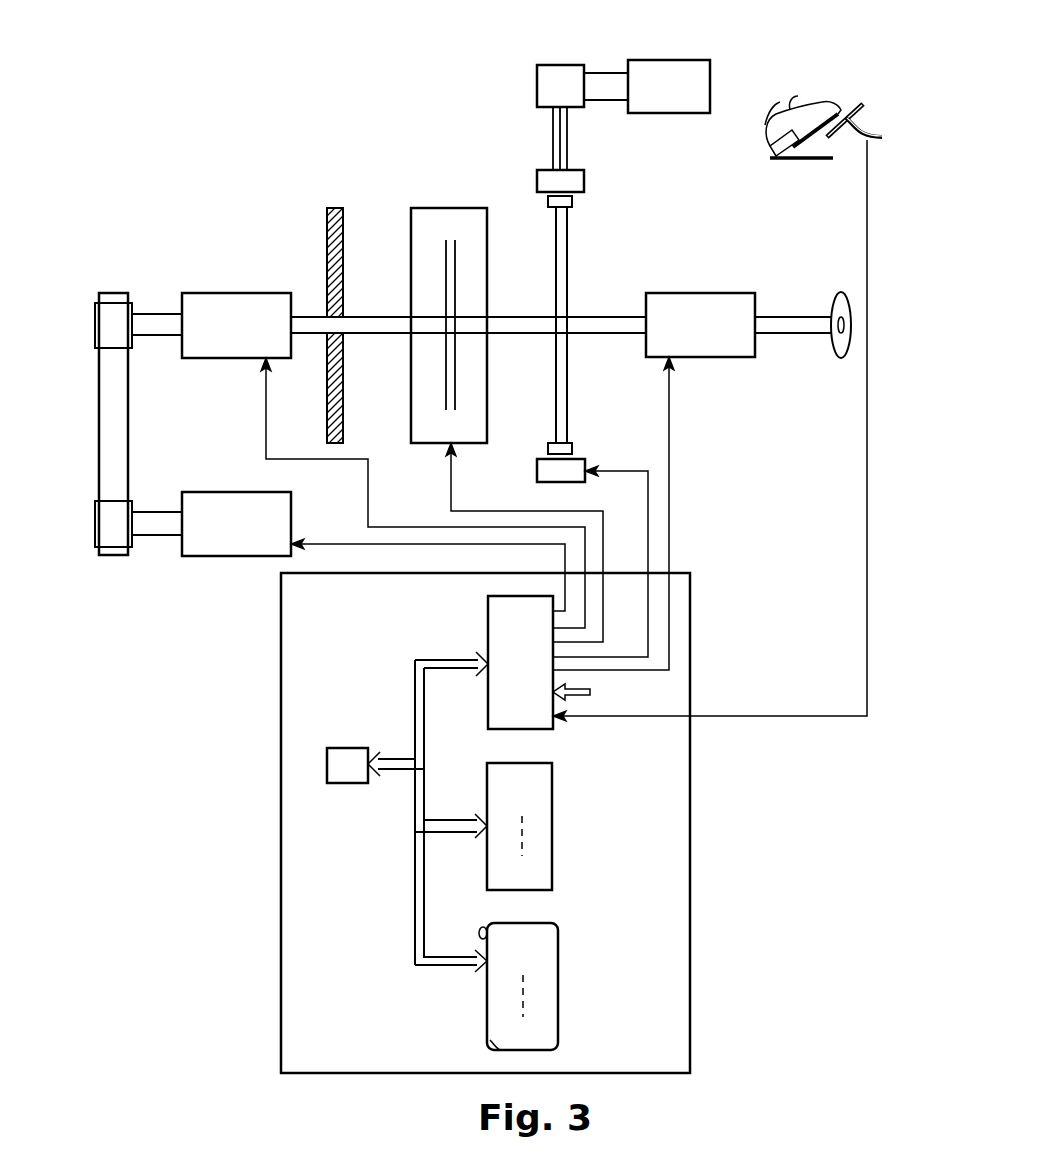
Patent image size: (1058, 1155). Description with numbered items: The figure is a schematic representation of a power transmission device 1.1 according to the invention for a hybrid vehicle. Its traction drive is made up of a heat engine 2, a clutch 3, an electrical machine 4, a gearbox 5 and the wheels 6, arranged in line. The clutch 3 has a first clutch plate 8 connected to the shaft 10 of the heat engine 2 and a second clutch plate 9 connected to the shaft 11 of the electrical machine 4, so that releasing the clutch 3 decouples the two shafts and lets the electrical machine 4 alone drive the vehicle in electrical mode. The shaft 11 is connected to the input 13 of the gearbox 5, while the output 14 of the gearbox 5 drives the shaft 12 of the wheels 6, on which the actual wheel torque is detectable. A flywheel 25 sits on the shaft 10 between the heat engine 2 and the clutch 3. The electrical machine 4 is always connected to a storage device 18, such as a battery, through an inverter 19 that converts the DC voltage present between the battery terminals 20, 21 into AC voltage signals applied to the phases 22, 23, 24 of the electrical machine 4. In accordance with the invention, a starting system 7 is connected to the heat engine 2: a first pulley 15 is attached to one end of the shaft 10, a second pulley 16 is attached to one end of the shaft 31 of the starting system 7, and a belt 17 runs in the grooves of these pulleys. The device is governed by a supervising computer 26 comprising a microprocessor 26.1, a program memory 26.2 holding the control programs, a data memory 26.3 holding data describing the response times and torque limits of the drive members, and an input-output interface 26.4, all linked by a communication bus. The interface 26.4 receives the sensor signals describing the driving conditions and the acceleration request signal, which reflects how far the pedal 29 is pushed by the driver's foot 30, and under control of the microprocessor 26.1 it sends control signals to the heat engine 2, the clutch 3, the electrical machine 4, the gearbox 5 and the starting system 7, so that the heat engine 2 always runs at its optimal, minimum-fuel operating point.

The transmission device 1.1 is at (312, 153).
The heat engine 2 is at (207, 293).
The clutch 3 is at (450, 208).
The electrical machine 4 is at (586, 257).
The gearbox 5 is at (700, 293).
The wheels 6 is at (838, 292).
The starting system 7 is at (202, 556).
The first clutch plate 8 is at (446, 397).
The second clutch plate 9 is at (455, 372).
The shaft of the heat engine 10 is at (375, 333).
The shaft of the electrical machine 11 is at (603, 317).
The shaft of the wheels 12 is at (782, 333).
The input of the gearbox 13 is at (646, 325).
The output of the gearbox 14 is at (755, 326).
The first pulley 15 is at (95, 325).
The second pulley 16 is at (95, 530).
The belt 17 is at (128, 407).
The storage device 18 is at (665, 60).
The inverter 19 is at (560, 65).
The battery terminal 20 is at (602, 73).
The battery terminal 21 is at (612, 100).
The phase of the electrical machine 22 is at (549, 118).
The phase of the electrical machine 23 is at (555, 148).
The phase of the electrical machine 24 is at (569, 126).
The flywheel 25 is at (327, 216).
The supervising computer 26 is at (690, 925).
The microprocessor 26.1 is at (350, 783).
The program memory 26.2 is at (558, 980).
The data memory 26.3 is at (552, 815).
The input-output interface 26.4 is at (488, 622).
The pedal 29 is at (862, 126).
The driver foot 30 is at (795, 110).
The shaft of the starting system 31 is at (152, 512).